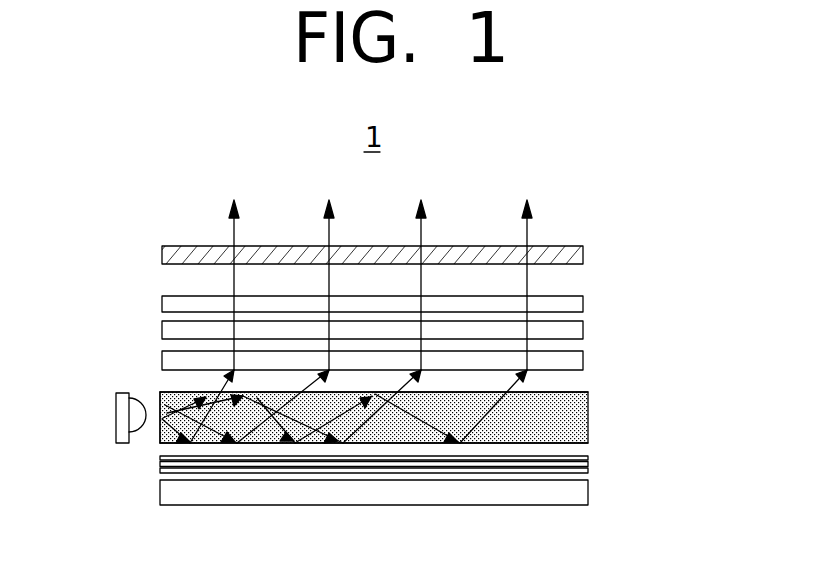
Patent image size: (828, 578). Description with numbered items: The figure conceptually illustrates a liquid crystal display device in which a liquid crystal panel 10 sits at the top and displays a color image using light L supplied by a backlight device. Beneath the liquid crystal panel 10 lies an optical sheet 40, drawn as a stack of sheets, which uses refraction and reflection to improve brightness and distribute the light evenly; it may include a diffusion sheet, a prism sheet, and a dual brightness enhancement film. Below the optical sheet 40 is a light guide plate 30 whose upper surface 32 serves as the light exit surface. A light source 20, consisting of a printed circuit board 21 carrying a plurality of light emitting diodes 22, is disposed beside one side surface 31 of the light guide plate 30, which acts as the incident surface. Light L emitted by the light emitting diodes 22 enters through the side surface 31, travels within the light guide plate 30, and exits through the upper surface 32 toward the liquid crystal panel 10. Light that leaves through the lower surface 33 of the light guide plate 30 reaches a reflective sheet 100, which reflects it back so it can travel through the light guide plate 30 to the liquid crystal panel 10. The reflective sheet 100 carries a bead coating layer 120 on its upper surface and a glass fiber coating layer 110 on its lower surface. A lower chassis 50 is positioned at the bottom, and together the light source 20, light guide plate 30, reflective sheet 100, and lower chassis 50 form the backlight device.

The liquid crystal panel 10 is at (598, 247).
The optical sheet 40 is at (588, 296).
The light guide plate 30 is at (603, 398).
The side surface 31 is at (158, 430).
The upper surface 32 is at (568, 392).
The lower surface 33 is at (533, 445).
The bead coating layer 120 is at (584, 454).
The reflective sheet 100 is at (603, 461).
The glass fiber coating layer 110 is at (589, 470).
The lower chassis 50 is at (603, 494).
The light source 20 is at (102, 465).
The printed circuit board 21 is at (118, 428).
The light emitting diodes 22 is at (138, 426).
The light L is at (187, 400).